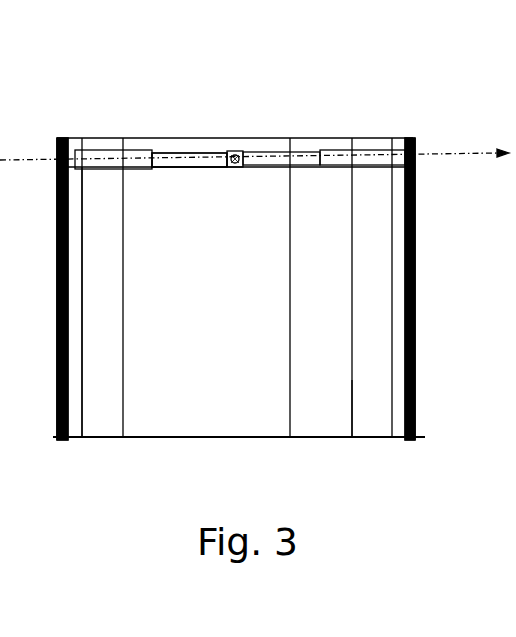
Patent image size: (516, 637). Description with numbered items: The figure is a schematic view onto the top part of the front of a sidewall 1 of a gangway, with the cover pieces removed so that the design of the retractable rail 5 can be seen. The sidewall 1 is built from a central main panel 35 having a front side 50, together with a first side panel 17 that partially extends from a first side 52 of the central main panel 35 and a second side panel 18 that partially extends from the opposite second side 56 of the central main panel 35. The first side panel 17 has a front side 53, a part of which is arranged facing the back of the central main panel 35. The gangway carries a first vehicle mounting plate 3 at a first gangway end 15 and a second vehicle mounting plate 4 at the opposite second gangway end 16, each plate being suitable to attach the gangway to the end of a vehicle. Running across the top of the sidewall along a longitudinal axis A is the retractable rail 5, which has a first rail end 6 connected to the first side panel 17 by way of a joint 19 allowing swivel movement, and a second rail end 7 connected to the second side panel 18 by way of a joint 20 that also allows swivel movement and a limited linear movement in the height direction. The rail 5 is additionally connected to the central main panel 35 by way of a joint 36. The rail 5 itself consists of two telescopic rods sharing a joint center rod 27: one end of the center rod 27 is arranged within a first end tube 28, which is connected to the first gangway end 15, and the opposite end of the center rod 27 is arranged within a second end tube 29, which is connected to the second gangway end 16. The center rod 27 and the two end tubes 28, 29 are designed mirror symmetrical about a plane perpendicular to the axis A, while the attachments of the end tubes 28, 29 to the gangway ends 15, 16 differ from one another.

The sidewall 1 is at (299, 96).
The first vehicle mounting plate 3 is at (58, 382).
The second vehicle mounting plate 4 is at (418, 277).
The retractable rail 5 is at (172, 152).
The first rail end 6 is at (68, 143).
The second rail end 7 is at (402, 143).
The first gangway end 15 is at (58, 279).
The second gangway end 16 is at (418, 305).
The first side panel 17 is at (103, 318).
The second side panel 18 is at (370, 390).
The joint 19 is at (62, 289).
The joint 20 is at (410, 289).
The center rod 27 is at (226, 167).
The first end tube 28 is at (125, 147).
The second end tube 29 is at (378, 165).
The central main panel 35 is at (270, 357).
The joint 36 is at (238, 151).
The front side 50 is at (212, 148).
The first side 52 is at (122, 426).
The front side 53 is at (92, 426).
The second side 56 is at (357, 418).
The longitudinal axis A is at (482, 138).